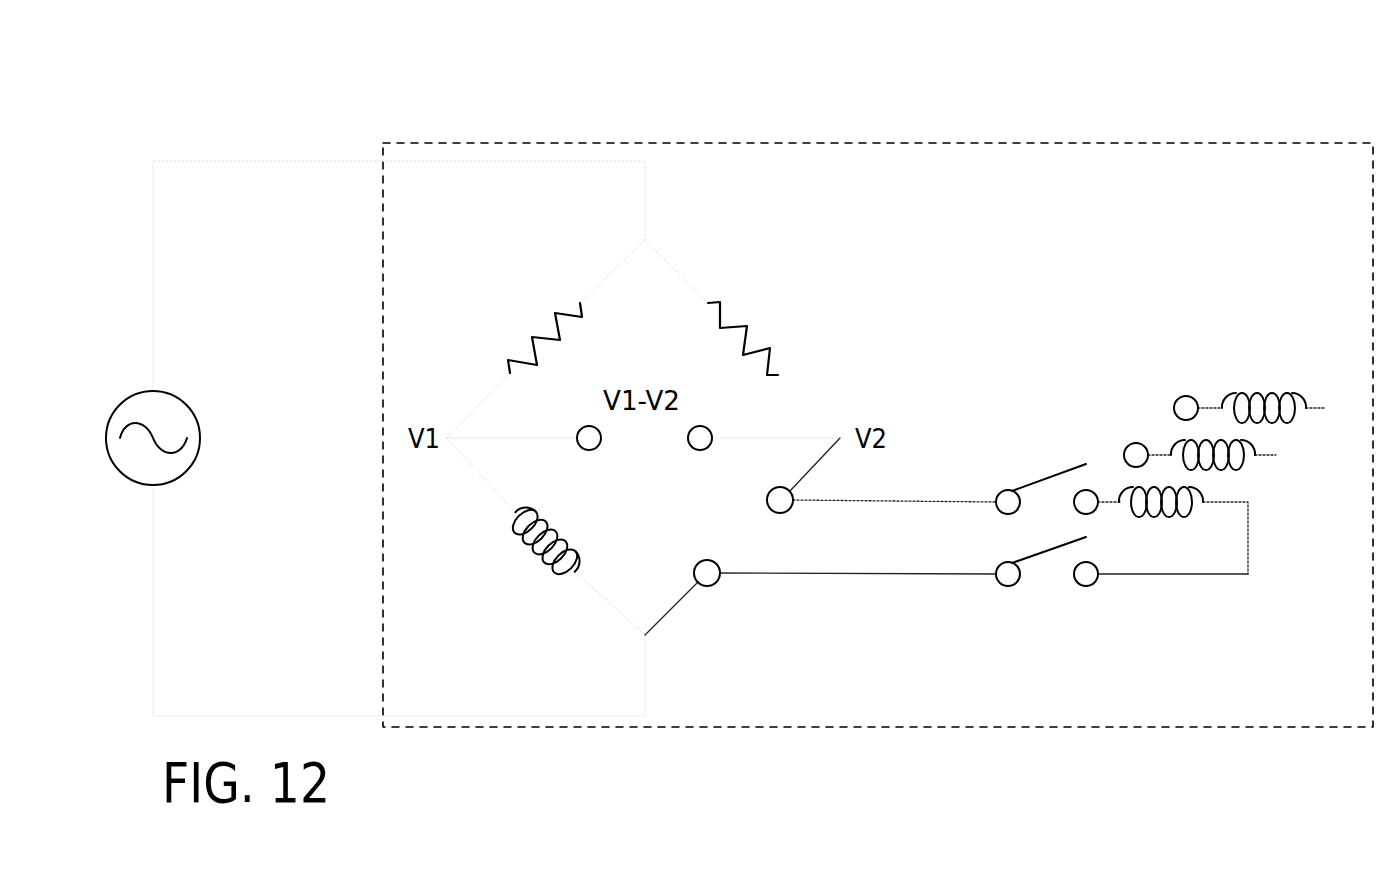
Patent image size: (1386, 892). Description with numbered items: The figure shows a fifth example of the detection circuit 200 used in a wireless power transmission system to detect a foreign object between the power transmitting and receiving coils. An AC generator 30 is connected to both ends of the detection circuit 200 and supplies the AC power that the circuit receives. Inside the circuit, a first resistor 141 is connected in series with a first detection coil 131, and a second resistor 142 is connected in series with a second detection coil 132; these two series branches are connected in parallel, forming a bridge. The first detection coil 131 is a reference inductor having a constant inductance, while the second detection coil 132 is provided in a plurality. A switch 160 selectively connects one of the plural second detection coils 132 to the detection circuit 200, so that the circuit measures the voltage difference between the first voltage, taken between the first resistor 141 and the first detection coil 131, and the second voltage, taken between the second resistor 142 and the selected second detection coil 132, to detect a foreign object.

The AC generator 30 is at (115, 384).
The detection circuit 200 is at (707, 143).
The first resistor 141 is at (518, 310).
The second resistor 142 is at (780, 315).
The first detection coil 131 is at (512, 565).
The second detection coil 132 is at (1292, 380).
The switch 160 is at (1047, 452).